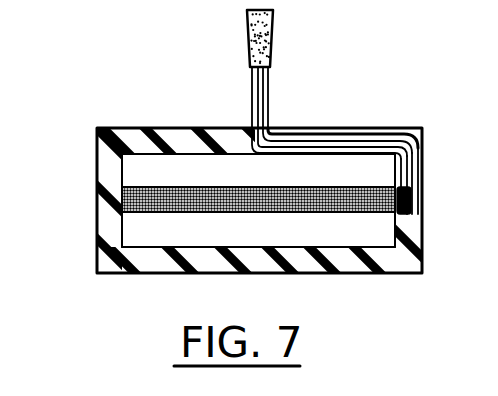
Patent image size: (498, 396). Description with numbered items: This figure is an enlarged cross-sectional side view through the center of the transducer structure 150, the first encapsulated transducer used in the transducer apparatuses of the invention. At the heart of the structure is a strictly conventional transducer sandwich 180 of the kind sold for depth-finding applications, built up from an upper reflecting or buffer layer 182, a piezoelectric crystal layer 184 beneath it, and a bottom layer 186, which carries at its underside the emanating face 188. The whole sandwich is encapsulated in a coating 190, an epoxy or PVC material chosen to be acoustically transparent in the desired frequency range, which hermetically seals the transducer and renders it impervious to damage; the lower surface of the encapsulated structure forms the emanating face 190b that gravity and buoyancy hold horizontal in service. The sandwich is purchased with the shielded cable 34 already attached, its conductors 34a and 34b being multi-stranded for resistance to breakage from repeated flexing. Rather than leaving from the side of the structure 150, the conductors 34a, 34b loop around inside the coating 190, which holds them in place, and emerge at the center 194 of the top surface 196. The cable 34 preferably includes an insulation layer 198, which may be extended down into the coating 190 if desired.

The transducer structure 150 is at (346, 312).
The coating 190 is at (165, 128).
The emanating face 190b is at (379, 274).
The emanating face 188 is at (163, 250).
The transducer sandwich 180 is at (112, 176).
The upper reflecting or buffer layer 182 is at (290, 182).
The piezoelectric crystal layer 184 is at (121, 203).
The bottom layer 186 is at (290, 241).
The insulation layer 198 is at (247, 25).
The shielded cable 34 is at (296, 85).
The conductor 34a is at (252, 95).
The conductor 34b is at (270, 86).
The center 194 is at (287, 121).
The top surface 196 is at (388, 128).